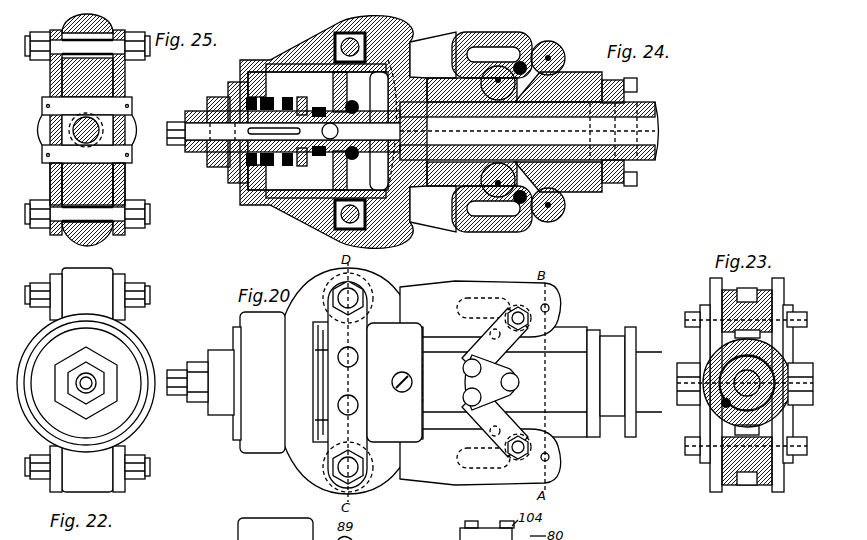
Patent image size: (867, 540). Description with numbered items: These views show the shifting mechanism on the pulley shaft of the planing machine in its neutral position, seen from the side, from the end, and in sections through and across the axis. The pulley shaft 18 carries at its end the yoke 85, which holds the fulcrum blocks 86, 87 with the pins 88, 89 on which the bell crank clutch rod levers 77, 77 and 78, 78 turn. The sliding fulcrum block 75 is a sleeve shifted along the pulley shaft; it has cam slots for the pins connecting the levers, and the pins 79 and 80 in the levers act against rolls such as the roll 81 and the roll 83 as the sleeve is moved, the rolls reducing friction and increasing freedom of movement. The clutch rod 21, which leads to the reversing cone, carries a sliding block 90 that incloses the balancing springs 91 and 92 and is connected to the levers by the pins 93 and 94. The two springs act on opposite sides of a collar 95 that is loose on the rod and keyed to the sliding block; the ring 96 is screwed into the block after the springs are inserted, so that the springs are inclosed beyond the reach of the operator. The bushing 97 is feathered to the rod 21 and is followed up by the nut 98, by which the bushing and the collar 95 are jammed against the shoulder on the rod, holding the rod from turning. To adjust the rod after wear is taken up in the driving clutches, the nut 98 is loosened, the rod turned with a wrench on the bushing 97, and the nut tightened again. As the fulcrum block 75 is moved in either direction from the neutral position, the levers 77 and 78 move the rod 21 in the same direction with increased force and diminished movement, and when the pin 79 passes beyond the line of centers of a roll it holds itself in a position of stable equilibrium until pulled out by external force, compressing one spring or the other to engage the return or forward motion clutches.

In FIG. 24, the pulley shaft 18 is at (619, 132).
In FIG. 23, the pulley shaft 18 is at (730, 372).
In FIG. 24, the operating rod 21 is at (529, 131).
In FIG. 23, the operating rod 21 is at (760, 396).
In FIG. 24, the sliding fulcrum block 75 is at (558, 132).
In FIG. 20, the sliding fulcrum block 75 is at (542, 382).
In FIG. 23, the sliding fulcrum block 75 is at (778, 360).
In FIG. 25, the clutch rod levers 77 is at (57, 30).
In FIG. 22, the clutch rod levers 77 is at (57, 279).
In FIG. 24, the clutch rod levers 77 is at (433, 55).
In FIG. 20, the clutch rod levers 77 is at (480, 309).
In FIG. 25, the clutch rod levers 78 is at (52, 182).
In FIG. 22, the clutch rod levers 78 is at (51, 485).
In FIG. 24, the clutch rod levers 78 is at (433, 209).
In FIG. 20, the clutch rod levers 78 is at (480, 457).
In FIG. 24, the pin 79 is at (536, 75).
In FIG. 20, the pin 79 is at (530, 326).
In FIG. 24, the pin 80 is at (540, 170).
In FIG. 20, the pin 80 is at (538, 437).
In FIG. 20, the roll 81 is at (557, 303).
In FIG. 23, the roll 81 is at (781, 292).
In FIG. 20, the roll 83 is at (558, 470).
In FIG. 23, the roll 83 is at (741, 478).
In FIG. 22, the yoke 85 is at (86, 397).
In FIG. 24, the yoke 85 is at (390, 118).
In FIG. 20, the yoke 85 is at (375, 385).
In FIG. 24, the fulcrum block 86 is at (386, 30).
In FIG. 24, the fulcrum block 87 is at (375, 236).
In FIG. 24, the pin 88 is at (338, 36).
In FIG. 24, the pin 89 is at (318, 230).
In FIG. 24, the sliding block 90 is at (343, 131).
In FIG. 24, the balancing spring 91 is at (270, 100).
In FIG. 24, the balancing spring 92 is at (319, 123).
In FIG. 24, the pin 93 is at (354, 114).
In FIG. 24, the pin 94 is at (345, 147).
In FIG. 24, the collar 95 is at (282, 131).
In FIG. 22, the ring 96 is at (86, 387).
In FIG. 24, the ring 96 is at (232, 88).
In FIG. 24, the bushing 97 is at (292, 131).
In FIG. 24, the nut 98 is at (175, 122).